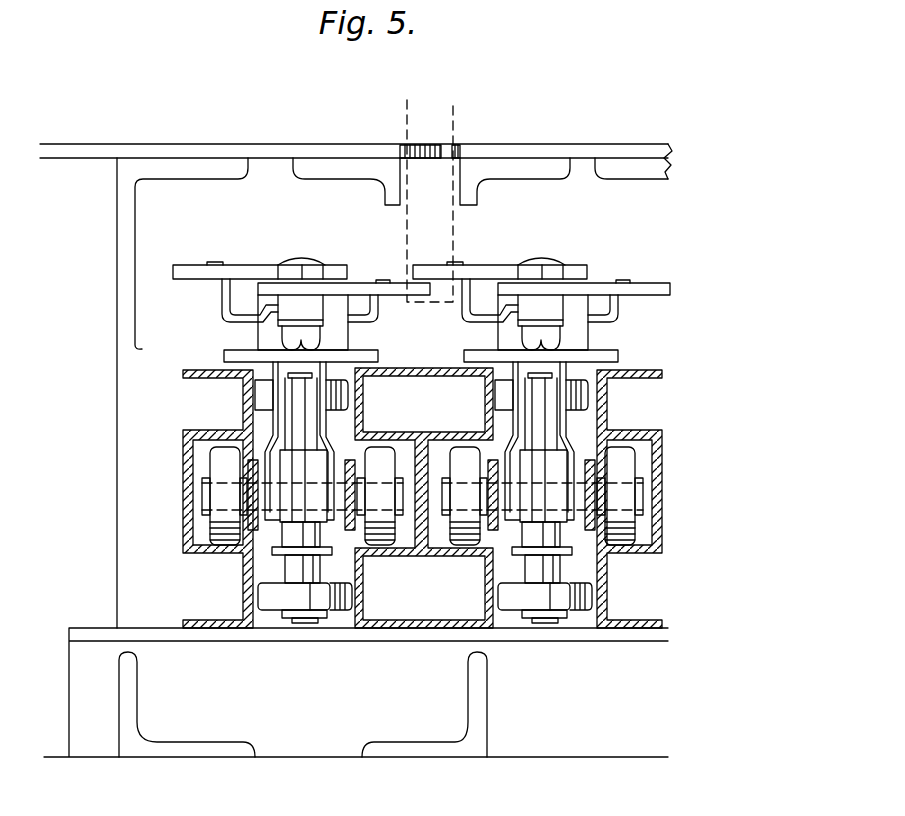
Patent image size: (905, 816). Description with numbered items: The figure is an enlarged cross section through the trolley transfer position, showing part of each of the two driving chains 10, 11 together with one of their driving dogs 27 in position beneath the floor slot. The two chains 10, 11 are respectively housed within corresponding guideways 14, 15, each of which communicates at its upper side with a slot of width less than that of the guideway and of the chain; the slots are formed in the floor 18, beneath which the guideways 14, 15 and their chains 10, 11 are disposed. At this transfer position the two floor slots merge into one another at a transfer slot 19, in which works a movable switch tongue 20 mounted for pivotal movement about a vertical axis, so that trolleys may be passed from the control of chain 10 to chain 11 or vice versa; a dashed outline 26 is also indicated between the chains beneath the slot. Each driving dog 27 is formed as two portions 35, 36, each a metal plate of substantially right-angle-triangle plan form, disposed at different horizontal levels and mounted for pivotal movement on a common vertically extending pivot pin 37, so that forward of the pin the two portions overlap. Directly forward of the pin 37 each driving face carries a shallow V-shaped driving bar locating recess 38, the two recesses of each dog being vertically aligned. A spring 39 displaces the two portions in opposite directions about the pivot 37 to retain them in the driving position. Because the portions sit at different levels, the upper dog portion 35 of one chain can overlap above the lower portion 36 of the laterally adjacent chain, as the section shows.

The driving chain 10 is at (592, 540).
The driving chain 11 is at (250, 545).
The guideway 14 is at (637, 447).
The guideway 15 is at (183, 496).
The floor 18 is at (190, 145).
The transfer slot 19 is at (407, 147).
The switch tongue 20 is at (440, 150).
The hanger rod (dashed outline) 26 is at (452, 250).
The driving dog 27 is at (340, 264).
The upper dog portion 35 is at (244, 265).
The lower dog portion 36 is at (360, 284).
The pivot pin 37 is at (298, 262).
The driving bar locating recess 38 is at (316, 265).
The spring 39 is at (222, 317).